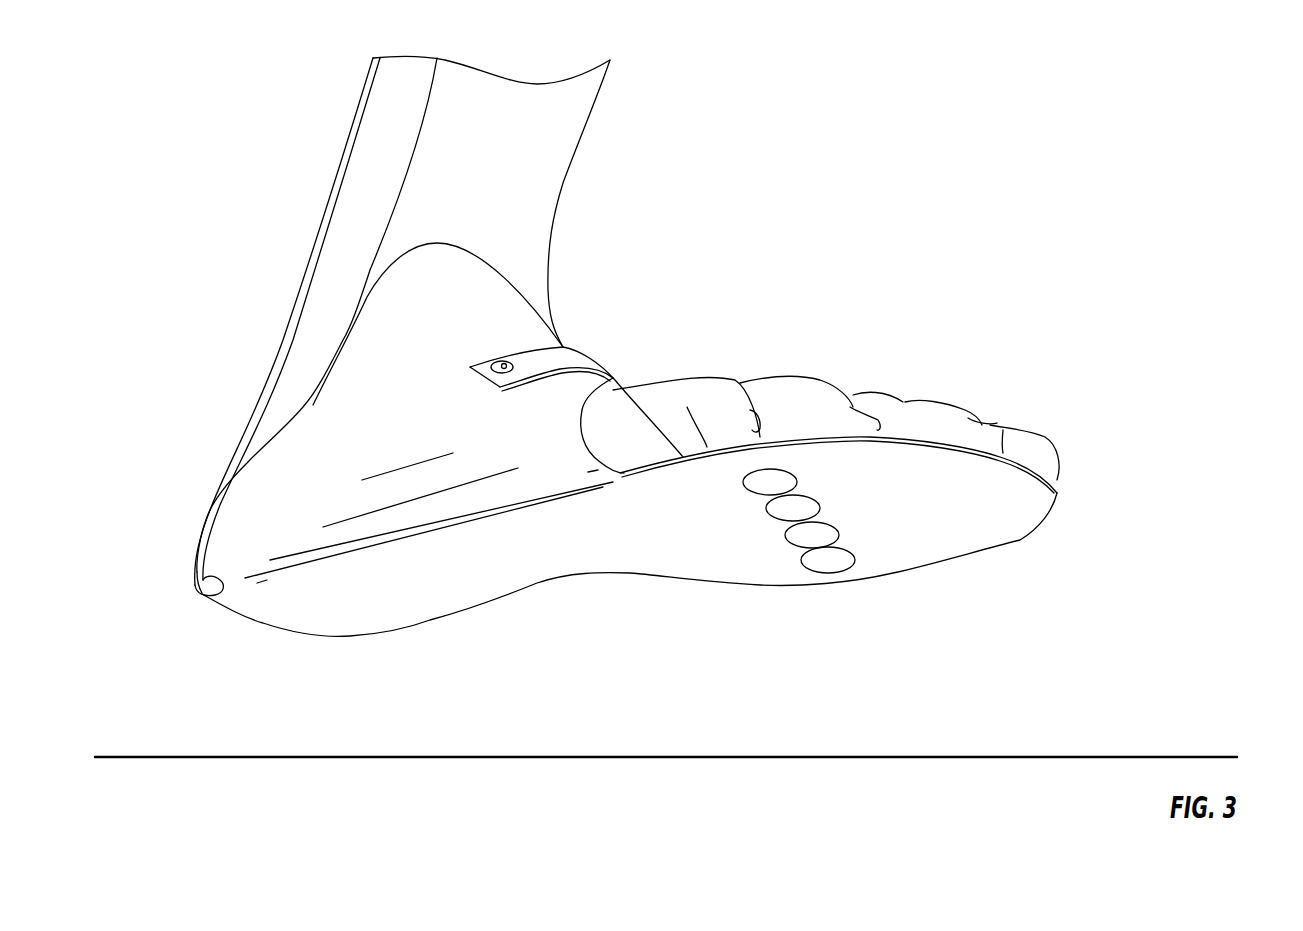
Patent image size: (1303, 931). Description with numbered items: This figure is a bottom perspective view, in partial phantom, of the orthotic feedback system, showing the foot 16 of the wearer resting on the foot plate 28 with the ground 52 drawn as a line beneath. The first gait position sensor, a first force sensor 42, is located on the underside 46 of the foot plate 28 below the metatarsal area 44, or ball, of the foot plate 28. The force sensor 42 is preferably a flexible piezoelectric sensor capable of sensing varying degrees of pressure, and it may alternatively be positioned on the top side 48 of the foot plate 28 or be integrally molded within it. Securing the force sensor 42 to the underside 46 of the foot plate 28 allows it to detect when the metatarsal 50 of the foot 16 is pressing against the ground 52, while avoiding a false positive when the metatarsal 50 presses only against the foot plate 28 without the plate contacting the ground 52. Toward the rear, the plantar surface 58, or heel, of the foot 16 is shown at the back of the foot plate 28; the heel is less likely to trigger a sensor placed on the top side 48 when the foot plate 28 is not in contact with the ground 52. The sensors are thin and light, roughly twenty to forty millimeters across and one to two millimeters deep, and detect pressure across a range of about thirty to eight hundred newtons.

The foot 16 is at (627, 320).
The foot plate 28 is at (675, 494).
The first force sensor 42 is at (832, 563).
The metatarsal area 44 is at (777, 437).
The underside 46 is at (965, 552).
The top side 48 is at (937, 437).
The metatarsal 50 is at (747, 432).
The ground 52 is at (717, 753).
The plantar surface 58 is at (202, 595).